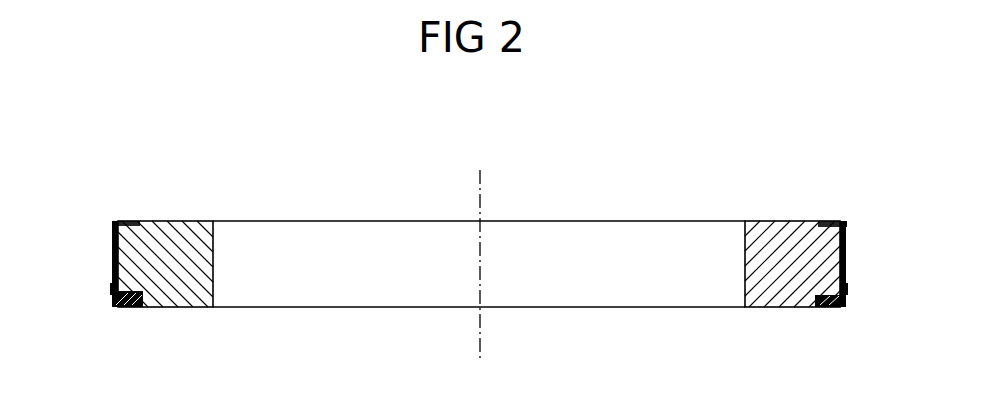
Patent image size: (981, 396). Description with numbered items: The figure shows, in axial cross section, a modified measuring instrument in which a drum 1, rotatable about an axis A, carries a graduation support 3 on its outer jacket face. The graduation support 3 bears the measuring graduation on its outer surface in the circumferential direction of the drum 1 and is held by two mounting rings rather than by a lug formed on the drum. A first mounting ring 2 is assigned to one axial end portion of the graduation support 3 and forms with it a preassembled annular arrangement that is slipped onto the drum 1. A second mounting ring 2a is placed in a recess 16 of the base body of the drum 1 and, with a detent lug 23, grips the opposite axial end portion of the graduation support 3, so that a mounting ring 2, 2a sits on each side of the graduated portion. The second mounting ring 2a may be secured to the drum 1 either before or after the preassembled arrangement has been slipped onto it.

The drum 1 is at (165, 213).
The mounting ring 2 is at (128, 316).
The graduation support 3 is at (108, 256).
The axis A is at (480, 253).
The recess 16 is at (826, 223).
The second mounting ring 2a is at (838, 224).
The detent lug 23 is at (847, 225).